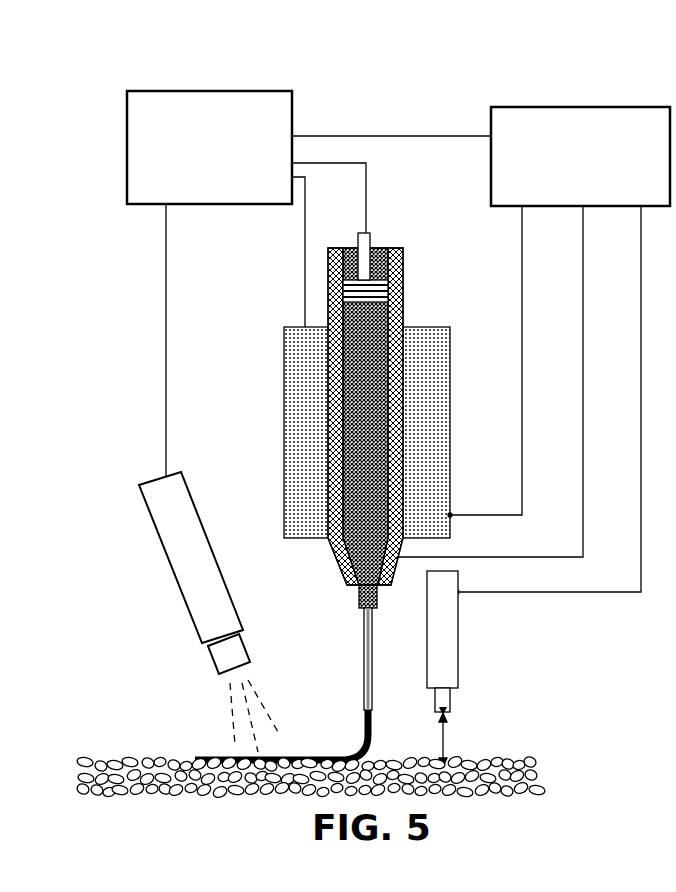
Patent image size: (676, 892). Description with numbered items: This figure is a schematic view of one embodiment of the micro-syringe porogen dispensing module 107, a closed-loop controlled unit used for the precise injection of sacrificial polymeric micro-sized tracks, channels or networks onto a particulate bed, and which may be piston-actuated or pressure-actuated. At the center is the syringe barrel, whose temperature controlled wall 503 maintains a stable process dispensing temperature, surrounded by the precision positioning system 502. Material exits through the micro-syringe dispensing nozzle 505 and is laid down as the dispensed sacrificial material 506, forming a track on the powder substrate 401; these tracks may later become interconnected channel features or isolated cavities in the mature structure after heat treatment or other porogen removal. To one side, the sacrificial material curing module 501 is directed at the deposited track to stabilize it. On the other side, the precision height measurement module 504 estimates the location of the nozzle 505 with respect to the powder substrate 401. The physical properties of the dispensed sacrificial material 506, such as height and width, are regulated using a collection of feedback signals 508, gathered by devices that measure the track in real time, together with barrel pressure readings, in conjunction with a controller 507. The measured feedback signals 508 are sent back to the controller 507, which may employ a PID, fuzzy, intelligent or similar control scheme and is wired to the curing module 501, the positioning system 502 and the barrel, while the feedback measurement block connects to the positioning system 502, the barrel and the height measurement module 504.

The micro-syringe porogen dispensing module 107 is at (108, 50).
The powder substrate 401 is at (90, 762).
The sacrificial material curing module 501 is at (140, 500).
The precision positioning system 502 is at (284, 378).
The temperature controlled wall 503 is at (401, 311).
The precision height measurement module 504 is at (448, 645).
The micro-syringe dispensing nozzle 505 is at (376, 672).
The dispensed sacrificial material 506 is at (192, 760).
The controller 507 is at (197, 91).
The feedback signals 508 is at (537, 107).